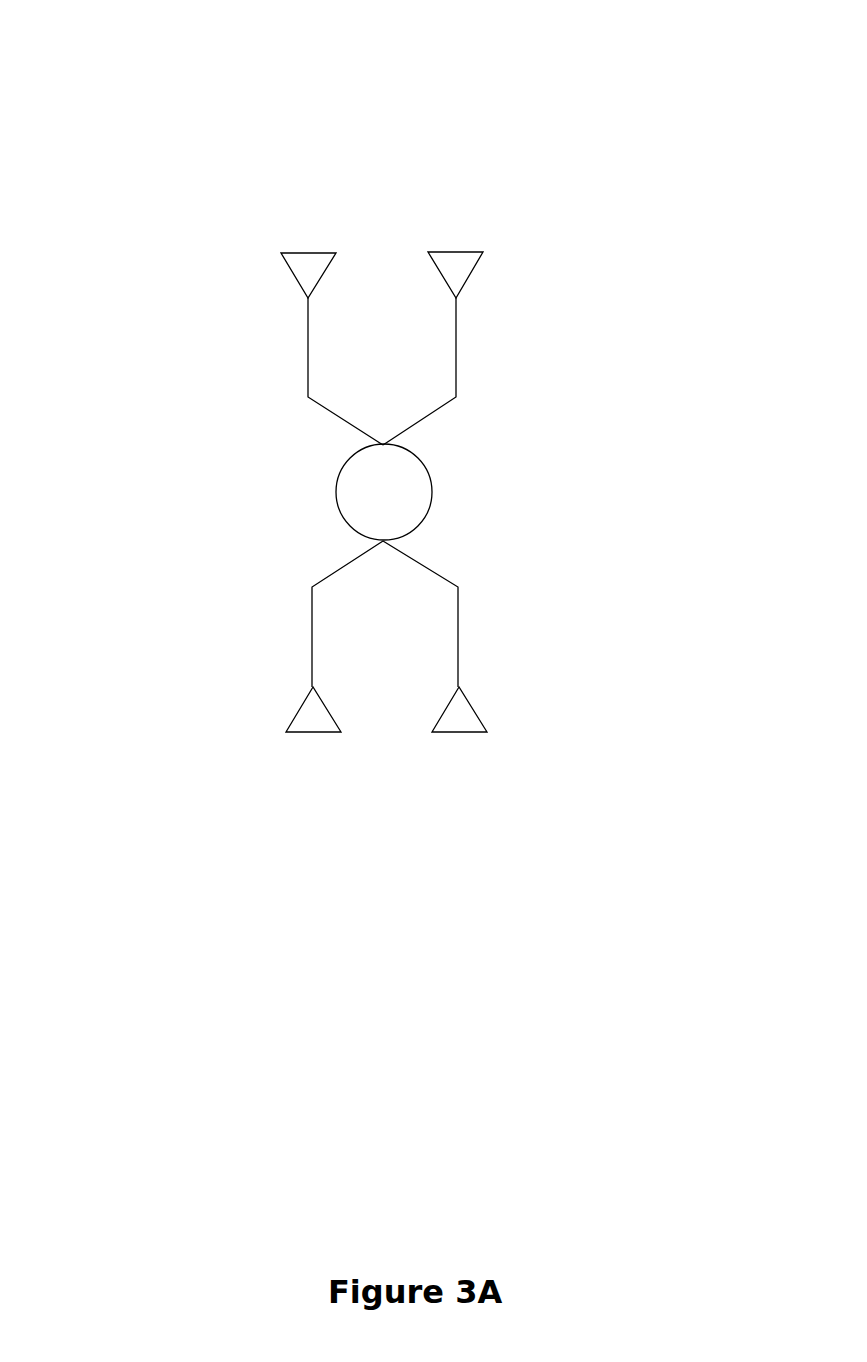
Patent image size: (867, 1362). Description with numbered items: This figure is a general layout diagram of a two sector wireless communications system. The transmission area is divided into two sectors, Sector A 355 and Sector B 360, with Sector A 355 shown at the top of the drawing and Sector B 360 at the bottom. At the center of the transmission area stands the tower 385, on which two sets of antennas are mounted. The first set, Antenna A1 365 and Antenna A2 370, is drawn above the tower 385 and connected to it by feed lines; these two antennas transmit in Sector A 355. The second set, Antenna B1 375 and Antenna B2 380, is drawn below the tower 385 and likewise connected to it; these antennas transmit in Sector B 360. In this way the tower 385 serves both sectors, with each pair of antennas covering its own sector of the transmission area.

The Sector A 355 is at (132, 53).
The Sector B 360 is at (116, 812).
The Antenna A1 365 is at (295, 252).
The Antenna A2 370 is at (442, 252).
The Antenna B1 375 is at (300, 733).
The Antenna B2 380 is at (473, 733).
The tower 385 is at (335, 480).